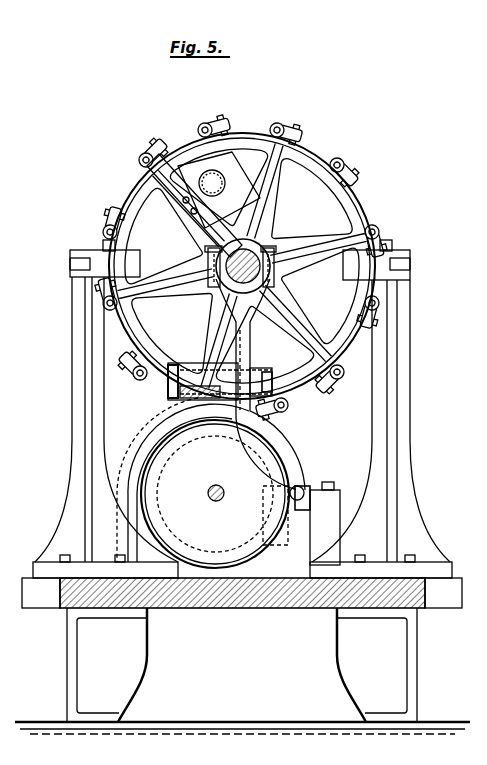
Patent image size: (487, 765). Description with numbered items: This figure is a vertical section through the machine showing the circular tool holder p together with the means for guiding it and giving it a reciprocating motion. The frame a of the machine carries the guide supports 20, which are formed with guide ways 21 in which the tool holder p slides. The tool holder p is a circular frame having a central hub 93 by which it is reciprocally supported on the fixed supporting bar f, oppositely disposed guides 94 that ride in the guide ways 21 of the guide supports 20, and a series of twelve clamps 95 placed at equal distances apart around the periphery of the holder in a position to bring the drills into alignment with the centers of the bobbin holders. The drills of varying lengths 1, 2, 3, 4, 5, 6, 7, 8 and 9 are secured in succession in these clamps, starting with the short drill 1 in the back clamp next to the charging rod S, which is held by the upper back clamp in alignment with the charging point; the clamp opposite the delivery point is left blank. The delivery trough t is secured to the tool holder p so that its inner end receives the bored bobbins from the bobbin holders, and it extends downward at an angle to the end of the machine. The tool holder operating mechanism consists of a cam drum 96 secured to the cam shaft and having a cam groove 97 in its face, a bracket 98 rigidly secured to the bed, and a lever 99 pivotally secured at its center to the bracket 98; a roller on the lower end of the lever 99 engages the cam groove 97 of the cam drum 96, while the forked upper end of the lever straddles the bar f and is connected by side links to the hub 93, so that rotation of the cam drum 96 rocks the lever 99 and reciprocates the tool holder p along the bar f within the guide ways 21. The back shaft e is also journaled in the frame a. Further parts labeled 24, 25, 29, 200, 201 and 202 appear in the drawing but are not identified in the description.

The drill 1 is at (343, 163).
The drill 2 is at (378, 231).
The drill 3 is at (382, 303).
The drill 4 is at (330, 381).
The drill 5 is at (287, 406).
The drill 6 is at (214, 408).
The drill 7 is at (134, 373).
The drill 8 is at (104, 306).
The drill 9 is at (105, 226).
The guide support 20 is at (139, 161).
The guide way 21 is at (88, 265).
The base plate 24 is at (240, 609).
The foundation leg 25 is at (66, 654).
The pedestal 29 is at (331, 489).
The central hub 93 is at (274, 250).
The guide 94 is at (100, 250).
The clamp 95 is at (212, 123).
The cam drum 96 is at (215, 494).
The cam groove 97 is at (275, 526).
The bracket 98 is at (120, 477).
The lever 99 is at (244, 360).
The block 200 is at (275, 503).
The wheel opening 201 is at (213, 292).
The hub bearing 202 is at (207, 262).
The charging rod S is at (286, 120).
The tool holder p is at (136, 194).
The delivery trough t is at (224, 184).
The fixed supporting bar f is at (242, 252).
The back shaft e is at (301, 487).
The frame a is at (208, 493).